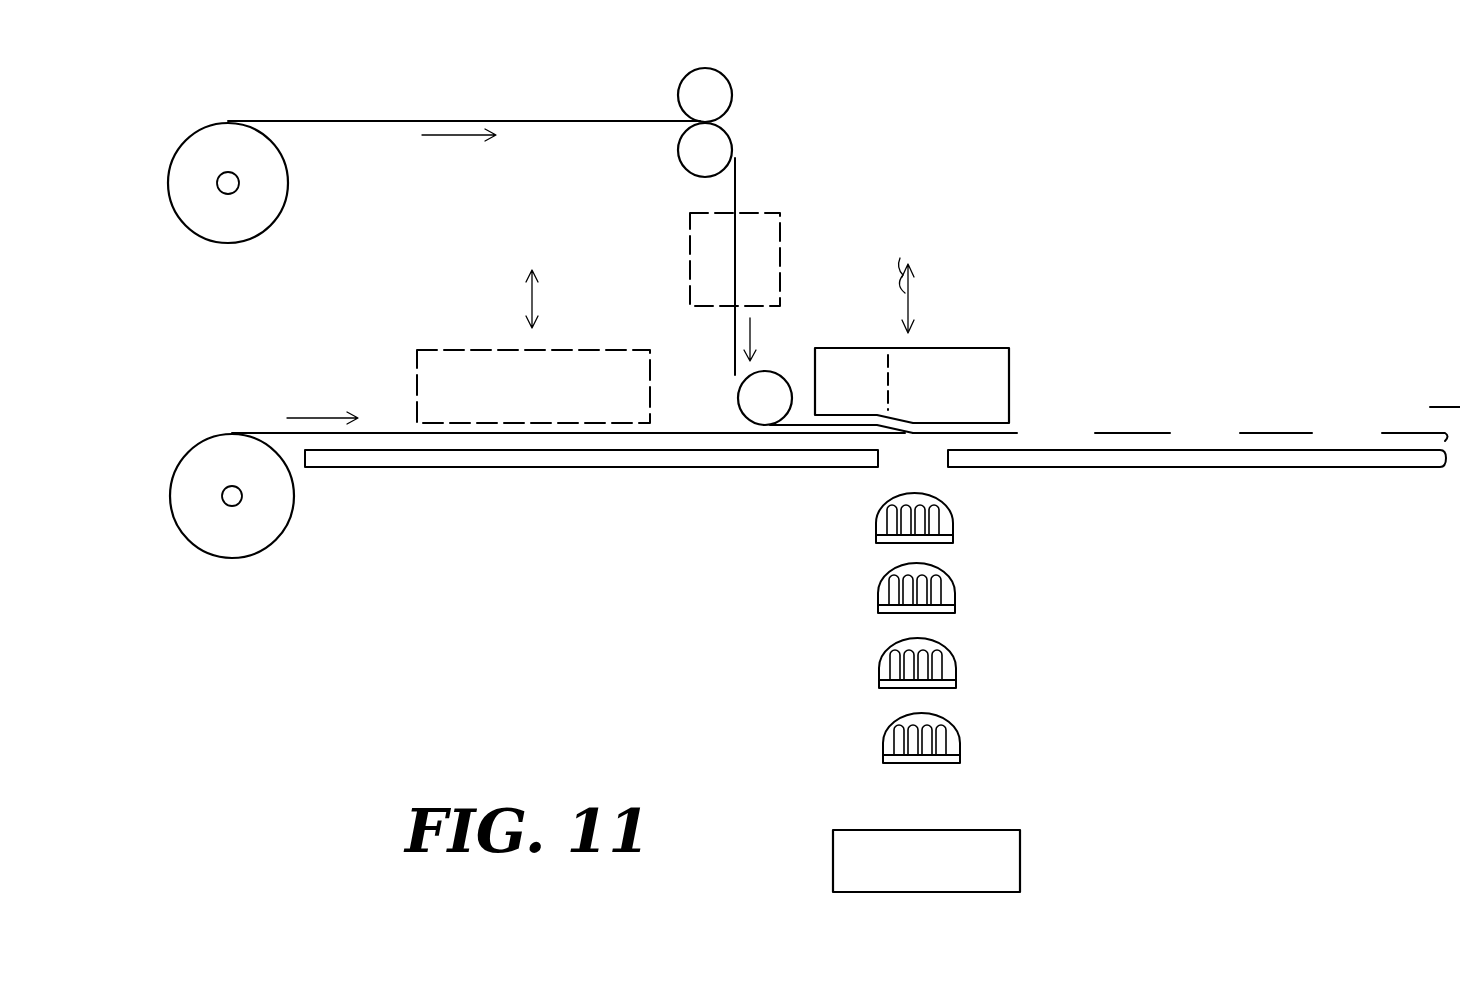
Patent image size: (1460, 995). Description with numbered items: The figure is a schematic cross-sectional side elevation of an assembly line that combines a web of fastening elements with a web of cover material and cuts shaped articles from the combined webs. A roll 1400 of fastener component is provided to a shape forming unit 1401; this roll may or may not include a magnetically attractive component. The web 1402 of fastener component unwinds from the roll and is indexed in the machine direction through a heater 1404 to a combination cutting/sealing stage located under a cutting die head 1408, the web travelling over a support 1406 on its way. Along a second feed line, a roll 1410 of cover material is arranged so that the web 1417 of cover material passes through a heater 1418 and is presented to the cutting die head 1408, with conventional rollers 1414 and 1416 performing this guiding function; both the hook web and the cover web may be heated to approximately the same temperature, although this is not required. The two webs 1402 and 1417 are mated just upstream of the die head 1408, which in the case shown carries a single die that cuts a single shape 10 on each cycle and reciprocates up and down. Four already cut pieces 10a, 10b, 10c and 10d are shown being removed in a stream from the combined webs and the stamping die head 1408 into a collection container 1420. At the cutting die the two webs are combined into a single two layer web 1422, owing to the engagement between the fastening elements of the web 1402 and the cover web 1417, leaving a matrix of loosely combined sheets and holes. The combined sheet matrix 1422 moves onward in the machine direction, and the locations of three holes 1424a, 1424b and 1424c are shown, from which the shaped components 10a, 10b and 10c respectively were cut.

The shape 10 is at (868, 763).
The cut piece 10a is at (960, 751).
The cut piece 10b is at (956, 677).
The cut piece 10c is at (878, 605).
The cut piece 10d is at (876, 537).
The roll of fastener component 1400 is at (192, 456).
The shape forming unit 1401 is at (462, 556).
The web of fastener component 1402 is at (262, 432).
The heater 1404 is at (480, 352).
The support platen 1406 is at (410, 458).
The cutting die head 1408 is at (957, 350).
The roll of cover material 1410 is at (210, 130).
The rollers 1414 is at (728, 75).
The roller 1416 is at (773, 380).
The web of cover material 1417 is at (366, 121).
The heater 1418 is at (758, 210).
The collection container 1420 is at (937, 873).
The two layer web 1422 is at (1012, 432).
The hole 1424a is at (1332, 432).
The hole 1424b is at (1195, 432).
The hole 1424c is at (1062, 436).